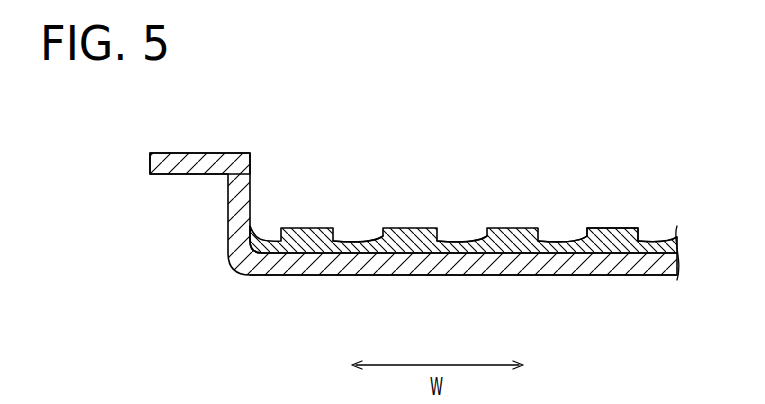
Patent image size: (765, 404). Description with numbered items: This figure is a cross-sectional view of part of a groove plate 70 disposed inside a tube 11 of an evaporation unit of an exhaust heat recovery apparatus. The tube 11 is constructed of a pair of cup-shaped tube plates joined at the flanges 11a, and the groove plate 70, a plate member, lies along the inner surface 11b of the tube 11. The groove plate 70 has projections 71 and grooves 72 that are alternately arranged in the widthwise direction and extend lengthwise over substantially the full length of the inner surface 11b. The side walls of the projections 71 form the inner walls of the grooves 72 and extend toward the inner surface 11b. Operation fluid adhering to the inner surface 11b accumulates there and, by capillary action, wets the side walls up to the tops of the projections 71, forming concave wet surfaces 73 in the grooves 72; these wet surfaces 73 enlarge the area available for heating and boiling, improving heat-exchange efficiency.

The tube 11 is at (530, 276).
The flange 11a is at (168, 152).
The inner surface 11b is at (572, 253).
The groove plate 70 is at (630, 227).
The projection 71 is at (607, 228).
The groove 72 is at (552, 240).
The wet surface 73 is at (343, 237).